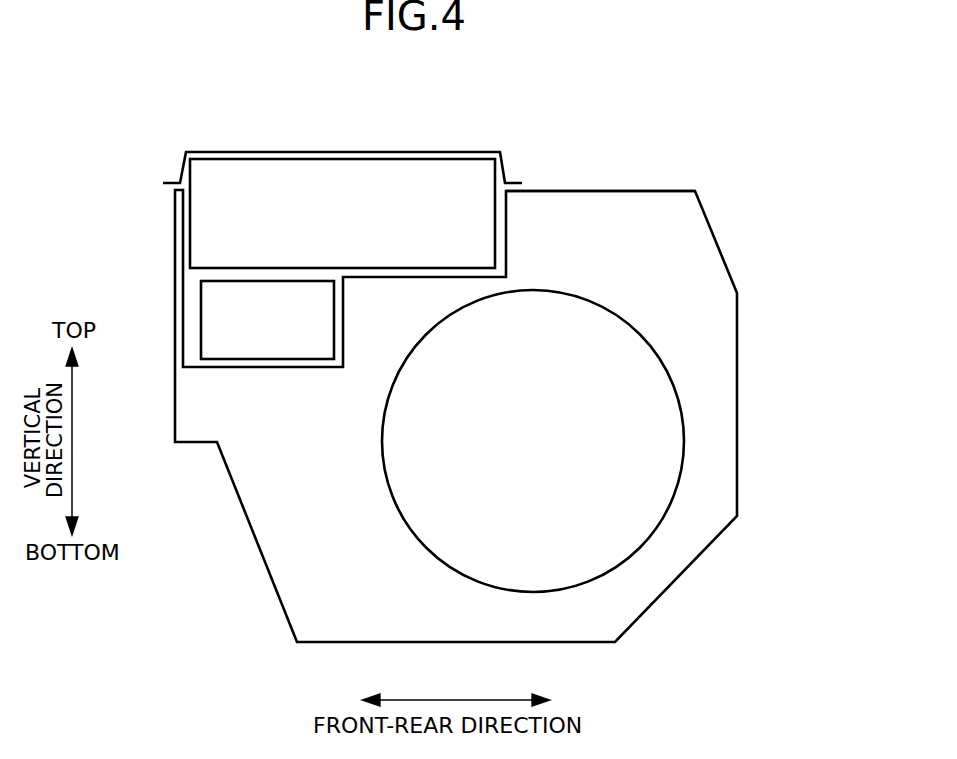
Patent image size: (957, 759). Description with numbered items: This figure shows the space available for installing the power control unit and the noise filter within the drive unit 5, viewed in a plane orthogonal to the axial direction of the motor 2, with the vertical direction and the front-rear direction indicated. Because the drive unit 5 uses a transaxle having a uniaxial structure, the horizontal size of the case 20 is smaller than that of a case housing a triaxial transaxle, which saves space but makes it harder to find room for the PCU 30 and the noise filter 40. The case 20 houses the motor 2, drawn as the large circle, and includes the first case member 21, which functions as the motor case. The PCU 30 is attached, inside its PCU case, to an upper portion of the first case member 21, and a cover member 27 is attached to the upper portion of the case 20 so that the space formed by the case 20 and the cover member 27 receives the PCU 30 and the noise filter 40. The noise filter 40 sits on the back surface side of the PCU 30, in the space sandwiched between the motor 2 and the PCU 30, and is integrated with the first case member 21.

The motor 2 is at (688, 439).
The drive unit 5 is at (642, 99).
The case 20 is at (742, 321).
The first case member 21 is at (650, 190).
The cover member 27 is at (482, 152).
The power control unit (PCU) 30 is at (364, 158).
The noise filter 40 is at (201, 300).